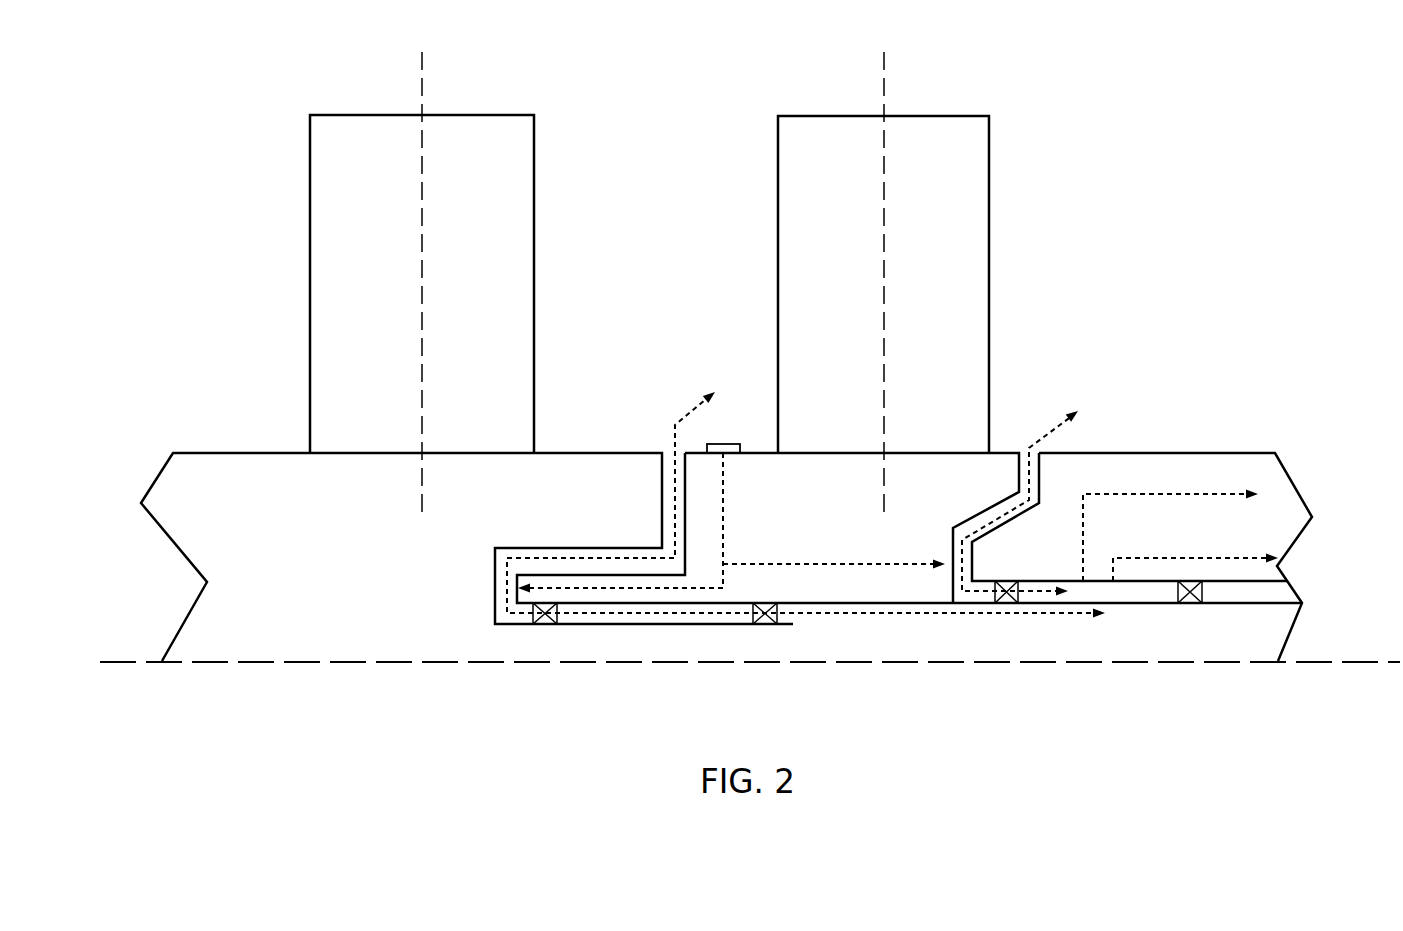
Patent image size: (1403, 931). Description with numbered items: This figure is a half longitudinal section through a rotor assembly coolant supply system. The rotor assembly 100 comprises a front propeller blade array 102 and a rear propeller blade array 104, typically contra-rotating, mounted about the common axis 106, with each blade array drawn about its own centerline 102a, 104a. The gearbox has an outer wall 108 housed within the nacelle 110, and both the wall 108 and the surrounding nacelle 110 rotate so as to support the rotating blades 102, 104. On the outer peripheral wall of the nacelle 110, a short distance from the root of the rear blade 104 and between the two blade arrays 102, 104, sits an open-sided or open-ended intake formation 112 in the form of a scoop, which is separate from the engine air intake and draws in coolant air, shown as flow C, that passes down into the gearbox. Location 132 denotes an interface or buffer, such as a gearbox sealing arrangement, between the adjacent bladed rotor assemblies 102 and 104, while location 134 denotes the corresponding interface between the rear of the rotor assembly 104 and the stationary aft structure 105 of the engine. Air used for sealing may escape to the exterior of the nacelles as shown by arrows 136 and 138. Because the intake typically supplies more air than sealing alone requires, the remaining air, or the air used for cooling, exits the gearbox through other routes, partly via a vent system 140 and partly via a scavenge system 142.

The rotor assembly 100 is at (1160, 88).
The front propeller blade array 102 is at (403, 133).
The first wall centerline 102a is at (422, 177).
The rear propeller blade array 104 is at (847, 137).
The second wall centerline 104a is at (885, 98).
The stationary aft structure 105 is at (1152, 468).
The common axis 106 is at (162, 661).
The gearbox outer wall 108 is at (644, 605).
The nacelle 110 is at (605, 452).
The intake formation 112 is at (727, 443).
The interface or buffer between adjacent rotor assemblies 132 is at (516, 558).
The interface or buffer between rear rotor and aft structure 134 is at (972, 592).
The sealing air escape arrow 136 is at (703, 400).
The sealing air escape arrow 138 is at (1043, 437).
The vent system 140 is at (1228, 497).
The scavenge system 142 is at (1233, 560).
The coolant flow C is at (702, 588).